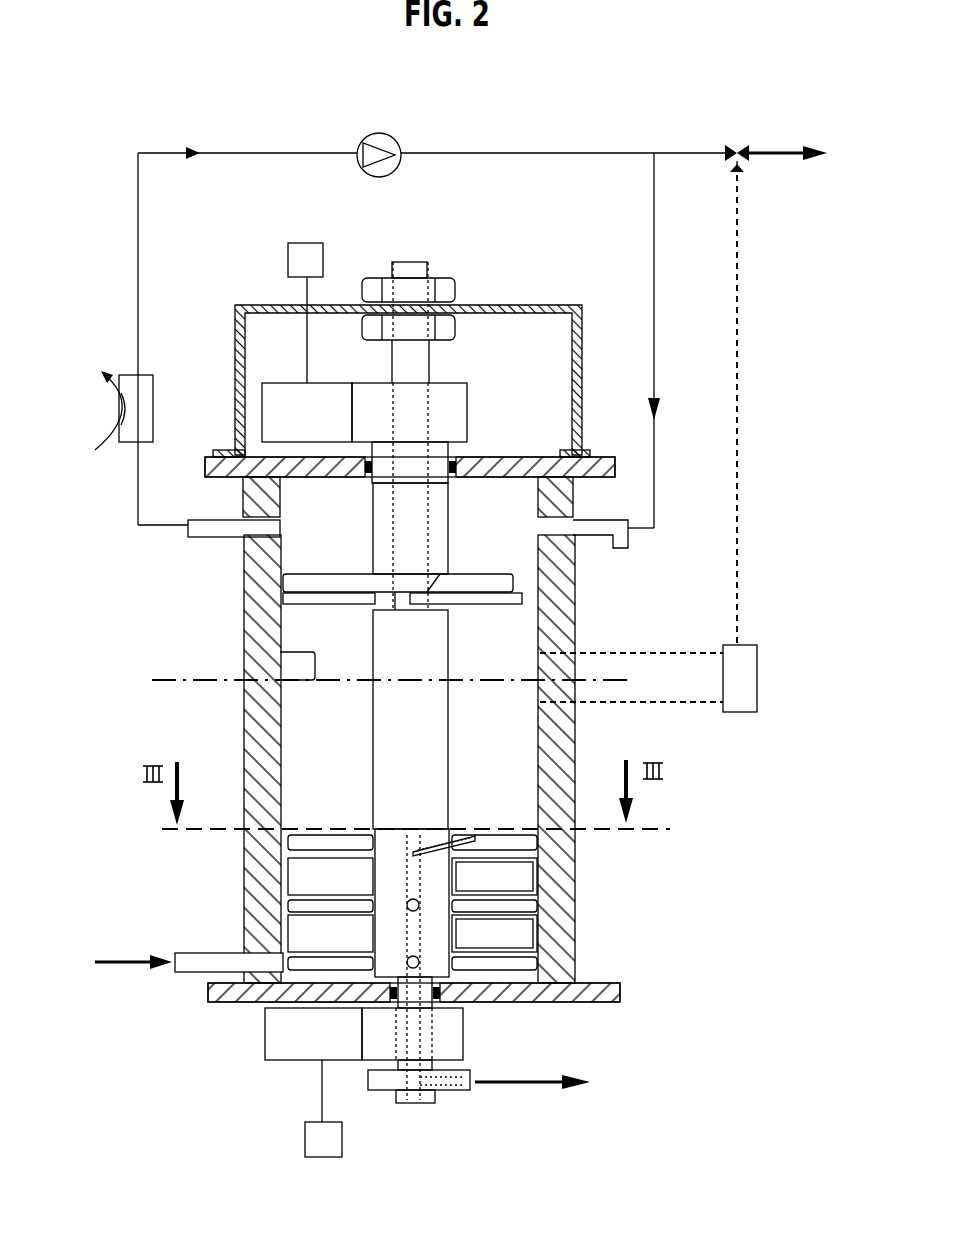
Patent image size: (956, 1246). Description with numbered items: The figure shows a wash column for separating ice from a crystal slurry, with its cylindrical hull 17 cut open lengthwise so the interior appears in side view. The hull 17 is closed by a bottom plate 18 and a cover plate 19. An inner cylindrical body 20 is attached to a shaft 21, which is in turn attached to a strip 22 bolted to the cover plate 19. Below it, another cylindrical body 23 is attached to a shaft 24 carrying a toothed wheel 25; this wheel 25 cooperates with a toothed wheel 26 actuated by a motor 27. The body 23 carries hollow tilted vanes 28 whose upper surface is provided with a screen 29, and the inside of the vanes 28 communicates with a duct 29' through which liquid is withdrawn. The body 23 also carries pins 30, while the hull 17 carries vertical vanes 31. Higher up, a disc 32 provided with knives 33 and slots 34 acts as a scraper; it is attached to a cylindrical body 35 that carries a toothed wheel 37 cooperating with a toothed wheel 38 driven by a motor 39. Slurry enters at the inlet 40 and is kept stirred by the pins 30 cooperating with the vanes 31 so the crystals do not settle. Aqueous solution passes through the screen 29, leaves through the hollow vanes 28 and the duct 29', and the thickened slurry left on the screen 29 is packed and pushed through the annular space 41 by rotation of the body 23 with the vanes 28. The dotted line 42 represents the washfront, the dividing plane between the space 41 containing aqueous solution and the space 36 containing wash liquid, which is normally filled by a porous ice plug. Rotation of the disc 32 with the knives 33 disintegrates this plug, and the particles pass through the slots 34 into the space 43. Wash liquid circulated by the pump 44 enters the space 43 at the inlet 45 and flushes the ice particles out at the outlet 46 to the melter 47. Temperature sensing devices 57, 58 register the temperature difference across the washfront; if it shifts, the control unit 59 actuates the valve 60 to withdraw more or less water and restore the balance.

The cylindrical hull 17 is at (262, 737).
The bottom plate 18 is at (590, 1002).
The cover plate 19 is at (603, 470).
The inner cylindrical body 20 is at (393, 705).
The shaft 21 is at (418, 358).
The strip 22 is at (408, 359).
The cylindrical body 23 is at (437, 903).
The shaft 24 is at (513, 1010).
The toothed wheel 25 is at (495, 1055).
The toothed wheel 26 is at (293, 1033).
The motor 27 is at (278, 1127).
The hollow tilted vanes 28 is at (559, 863).
The screen 29 is at (578, 827).
The duct 29' is at (287, 854).
The pins 30 is at (505, 962).
The vertical vanes 31 is at (503, 933).
The disc 32 is at (493, 585).
The knives 33 is at (323, 598).
The slots 34 is at (383, 583).
The cylindrical body 35 is at (380, 488).
The space 36 is at (601, 628).
The toothed wheel 37 is at (442, 408).
The toothed wheel 38 is at (306, 391).
The motor 39 is at (288, 265).
The slurry inlet 40 is at (189, 943).
The annular space 41 is at (500, 747).
The washfront 42 is at (290, 655).
The space 43 is at (322, 507).
The pump 44 is at (367, 142).
The wash liquid inlet 45 is at (628, 548).
The outlet 46 is at (209, 543).
The melter 47 is at (148, 403).
The temperature sensing device 57 is at (631, 668).
The temperature sensing device 58 is at (631, 717).
The control unit 59 is at (753, 457).
The valve 60 is at (765, 143).